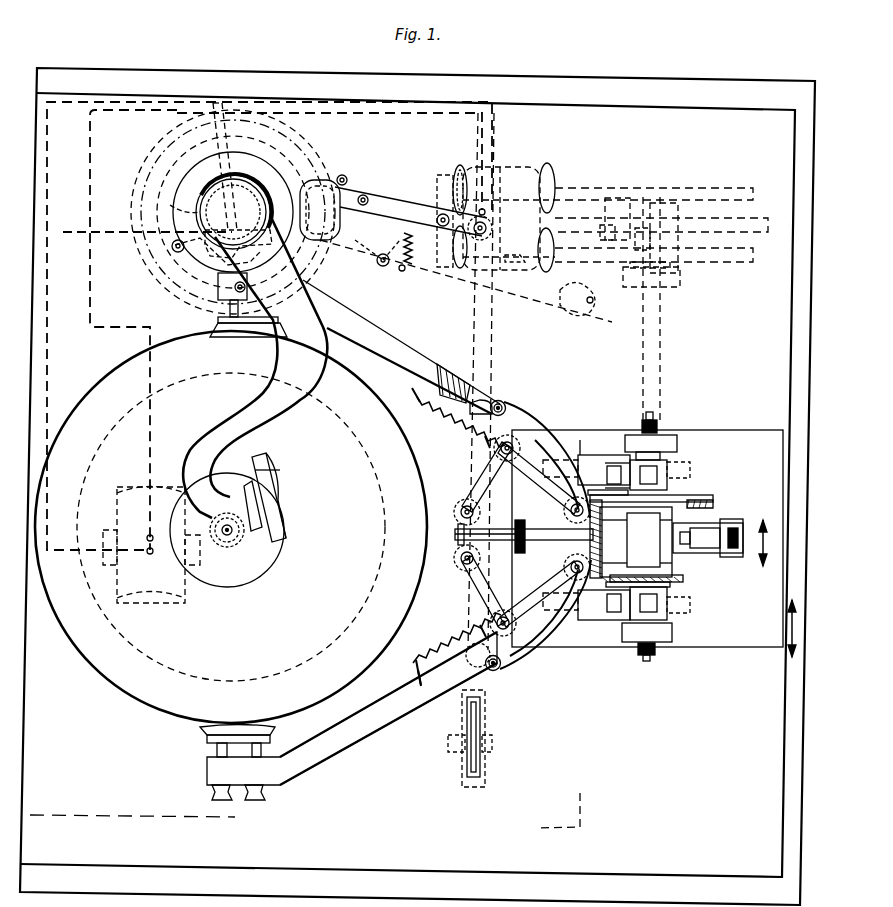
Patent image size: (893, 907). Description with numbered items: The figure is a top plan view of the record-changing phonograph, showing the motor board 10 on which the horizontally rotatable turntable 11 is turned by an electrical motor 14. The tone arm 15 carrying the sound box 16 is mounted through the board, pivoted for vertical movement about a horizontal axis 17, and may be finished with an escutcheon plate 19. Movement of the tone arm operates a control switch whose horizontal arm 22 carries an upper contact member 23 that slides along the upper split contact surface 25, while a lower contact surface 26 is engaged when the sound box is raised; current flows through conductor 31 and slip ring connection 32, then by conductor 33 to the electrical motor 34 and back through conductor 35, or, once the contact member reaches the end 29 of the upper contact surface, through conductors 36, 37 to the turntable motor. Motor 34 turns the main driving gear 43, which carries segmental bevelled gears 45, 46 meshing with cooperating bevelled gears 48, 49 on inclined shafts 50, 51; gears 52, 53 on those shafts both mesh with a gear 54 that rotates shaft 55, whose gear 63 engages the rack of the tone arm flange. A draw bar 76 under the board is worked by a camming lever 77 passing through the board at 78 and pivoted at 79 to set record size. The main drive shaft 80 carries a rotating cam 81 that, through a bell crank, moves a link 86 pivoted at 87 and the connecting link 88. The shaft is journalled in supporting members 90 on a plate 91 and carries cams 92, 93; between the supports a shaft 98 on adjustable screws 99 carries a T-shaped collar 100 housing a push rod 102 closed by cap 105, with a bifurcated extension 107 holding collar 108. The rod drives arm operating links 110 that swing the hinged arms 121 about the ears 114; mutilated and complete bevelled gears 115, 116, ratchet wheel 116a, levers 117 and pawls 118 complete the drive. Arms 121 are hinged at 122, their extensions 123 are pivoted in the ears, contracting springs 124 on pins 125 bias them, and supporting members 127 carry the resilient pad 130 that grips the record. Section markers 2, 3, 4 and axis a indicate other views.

The section line 2- 2 is at (457, 534).
The section line 3- 3 is at (417, 708).
The position mark 4 is at (425, 370).
The motor board 10 is at (585, 795).
The turntable 11 is at (92, 388).
The electrical motor 14 is at (160, 592).
The tone arm 15 is at (240, 410).
The sound box 16 is at (284, 508).
The horizontal axis 17 is at (222, 247).
The escutcheon plate 19 is at (178, 214).
The horizontal arm 22 is at (250, 162).
The upper contact member 23 is at (225, 136).
The upper split contact surface 25 is at (235, 110).
The lower contact surface 26 is at (133, 172).
The end of upper contact surface 29 is at (158, 145).
The conductor 31 is at (106, 232).
The slip ring connection 32 is at (234, 211).
The conductor 33 is at (400, 118).
The electrical motor 34 is at (508, 170).
The conductor 35 is at (60, 152).
The conductor 36 is at (127, 110).
The conductor 37 is at (45, 548).
The main driving gear 43 is at (766, 225).
The segmental bevelled gear 45 is at (612, 205).
The segmental bevelled gear 46 is at (586, 239).
The cooperating bevelled gear 48 is at (555, 170).
The cooperating bevelled gear 49 is at (555, 272).
The inclined shaft 50 is at (535, 178).
The inclined shaft 51 is at (523, 262).
The gear 52 is at (460, 168).
The gear 53 is at (462, 272).
The gear 54 is at (443, 212).
The shaft 55 is at (377, 261).
The gear 63 is at (334, 232).
The draw bar 76 is at (488, 340).
The camming lever 77 is at (481, 710).
The motor board opening 78 is at (466, 712).
The pivot 79 is at (478, 765).
The main drive shaft 80 is at (660, 343).
The rotating cam 81 is at (683, 283).
The link 86 is at (561, 308).
The pivot shaft 87 is at (592, 312).
The connecting link 88 is at (386, 268).
The supporting members 90 is at (668, 440).
The plate 91 is at (736, 648).
The cam 92 is at (578, 612).
The cam 93 is at (590, 455).
The shaft 98 is at (672, 456).
The adjustable screws 99 is at (655, 418).
The T-shaped collar 100 is at (631, 539).
The push rod 102 is at (497, 529).
The cap 105 is at (521, 552).
The bifurcated extension 107 is at (718, 523).
The collar 108 is at (725, 553).
The arm operating links 110 is at (468, 500).
The ears 114 is at (548, 492).
The mutilated bevelled gear 115 is at (598, 470).
The complete bevelled gear 116 is at (705, 581).
The ratchet wheel 116a is at (685, 587).
The levers 117 is at (678, 473).
The pivoted pawls 118 is at (690, 498).
The hinged arms 121 is at (425, 331).
The hinge 122 is at (504, 407).
The hinged extension 123 is at (545, 438).
The contracting springs 124 is at (452, 430).
The protruding pins 125 is at (416, 682).
The supporting members 127 is at (225, 303).
The resilient pad 130 is at (228, 330).
The axis a is at (630, 400).